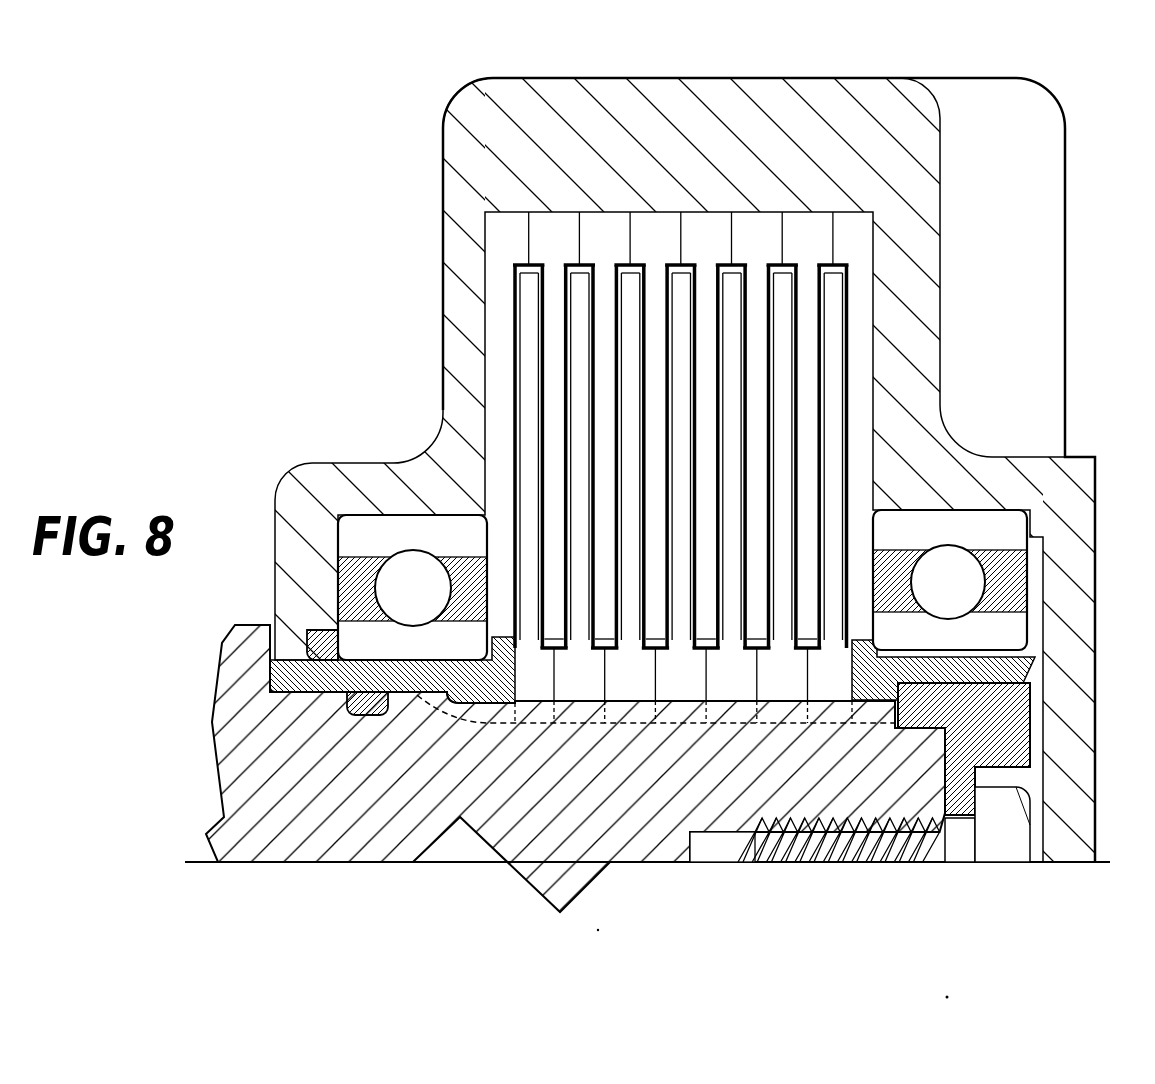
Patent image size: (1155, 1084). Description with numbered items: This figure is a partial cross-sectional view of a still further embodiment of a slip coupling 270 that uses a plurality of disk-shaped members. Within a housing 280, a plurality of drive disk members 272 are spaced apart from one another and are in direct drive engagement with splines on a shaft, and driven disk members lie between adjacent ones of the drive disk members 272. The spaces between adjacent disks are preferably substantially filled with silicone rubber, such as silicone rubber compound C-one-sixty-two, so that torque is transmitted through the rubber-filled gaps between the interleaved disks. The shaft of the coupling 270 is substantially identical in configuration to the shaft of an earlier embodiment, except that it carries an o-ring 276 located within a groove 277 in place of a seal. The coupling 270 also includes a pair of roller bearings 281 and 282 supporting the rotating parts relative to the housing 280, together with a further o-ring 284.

The slip coupling 270 is at (386, 388).
The drive disk members 272 is at (573, 290).
The o-ring 276 is at (333, 705).
The groove 277 is at (384, 716).
The housing 280 is at (568, 103).
The roller bearing 281 is at (400, 540).
The roller bearing 282 is at (970, 528).
The o-ring 284 is at (318, 632).